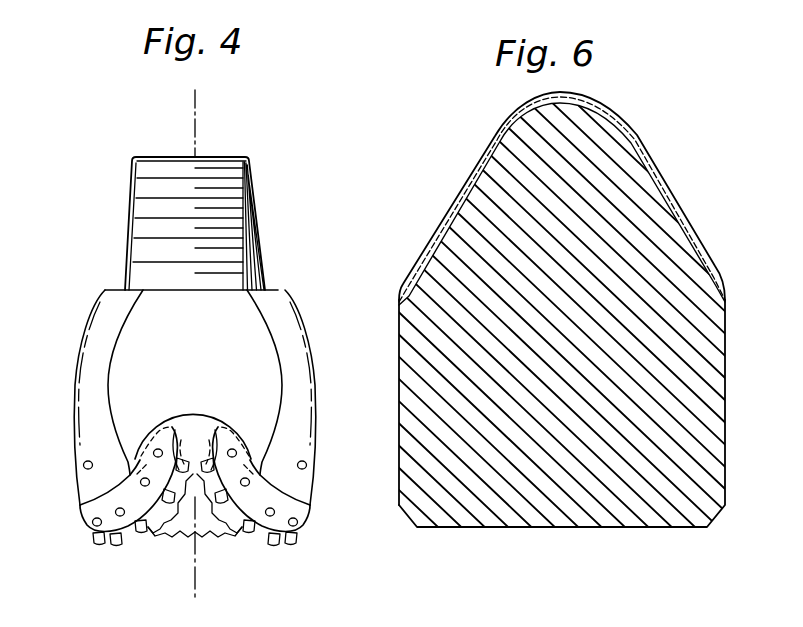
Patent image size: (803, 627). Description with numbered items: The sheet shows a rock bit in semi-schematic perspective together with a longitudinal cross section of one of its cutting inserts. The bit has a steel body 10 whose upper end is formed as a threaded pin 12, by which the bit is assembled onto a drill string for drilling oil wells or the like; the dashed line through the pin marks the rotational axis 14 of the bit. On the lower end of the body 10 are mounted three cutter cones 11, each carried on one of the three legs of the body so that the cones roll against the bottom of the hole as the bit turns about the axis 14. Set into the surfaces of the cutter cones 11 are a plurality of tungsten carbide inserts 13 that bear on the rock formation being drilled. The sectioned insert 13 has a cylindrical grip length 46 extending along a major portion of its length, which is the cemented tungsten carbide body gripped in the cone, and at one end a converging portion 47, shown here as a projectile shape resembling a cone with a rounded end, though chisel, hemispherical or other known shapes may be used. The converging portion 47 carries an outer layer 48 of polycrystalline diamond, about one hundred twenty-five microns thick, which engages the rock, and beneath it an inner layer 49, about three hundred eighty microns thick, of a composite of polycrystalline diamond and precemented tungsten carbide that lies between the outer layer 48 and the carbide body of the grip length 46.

In FIG. 4, the steel body 10 is at (88, 442).
In FIG. 4, the cutter cone 11 is at (127, 538).
In FIG. 4, the threaded pin 12 is at (140, 250).
In FIG. 4, the tungsten carbide insert 13 is at (95, 544).
In FIG. 6, the tungsten carbide insert 13 is at (398, 340).
In FIG. 4, the rotational axis 14 is at (196, 112).
In FIG. 6, the cylindrical grip length 46 is at (725, 413).
In FIG. 6, the converging portion 47 is at (662, 181).
In FIG. 6, the outer layer 48 is at (647, 152).
In FIG. 6, the inner layer 49 is at (628, 124).